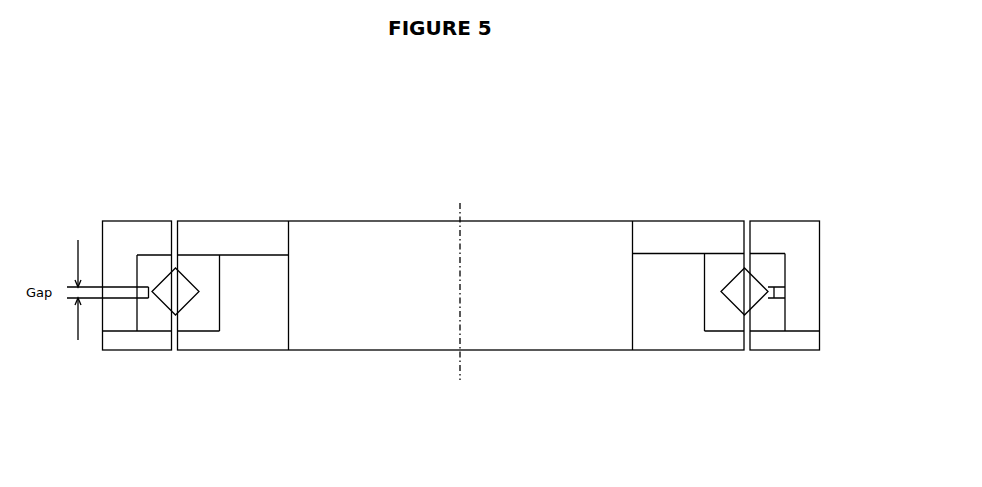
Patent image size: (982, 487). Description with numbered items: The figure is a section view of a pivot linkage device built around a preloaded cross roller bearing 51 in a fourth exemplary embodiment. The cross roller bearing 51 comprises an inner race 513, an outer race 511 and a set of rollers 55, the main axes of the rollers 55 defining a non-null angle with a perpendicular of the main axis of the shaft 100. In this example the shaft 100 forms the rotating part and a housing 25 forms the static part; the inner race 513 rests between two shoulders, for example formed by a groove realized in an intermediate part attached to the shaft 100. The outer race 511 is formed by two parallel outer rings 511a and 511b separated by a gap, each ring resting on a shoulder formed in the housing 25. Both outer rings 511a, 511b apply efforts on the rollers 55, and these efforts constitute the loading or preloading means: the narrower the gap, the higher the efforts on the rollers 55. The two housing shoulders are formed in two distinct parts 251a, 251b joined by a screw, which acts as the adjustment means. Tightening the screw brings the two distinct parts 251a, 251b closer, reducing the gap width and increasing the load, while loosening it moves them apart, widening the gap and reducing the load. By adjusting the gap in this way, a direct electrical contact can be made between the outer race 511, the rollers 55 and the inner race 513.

The shaft 100 is at (527, 237).
The cross roller bearing 51 is at (747, 260).
The rollers 55 is at (746, 296).
The housing 25 is at (793, 221).
The first distinct part of the housing 251a is at (807, 233).
The second distinct part of the housing 251b is at (772, 342).
The outer race 511 is at (155, 334).
The first parallel outer ring 511a is at (147, 258).
The second parallel outer ring 511b is at (147, 323).
The inner race 513 is at (195, 254).